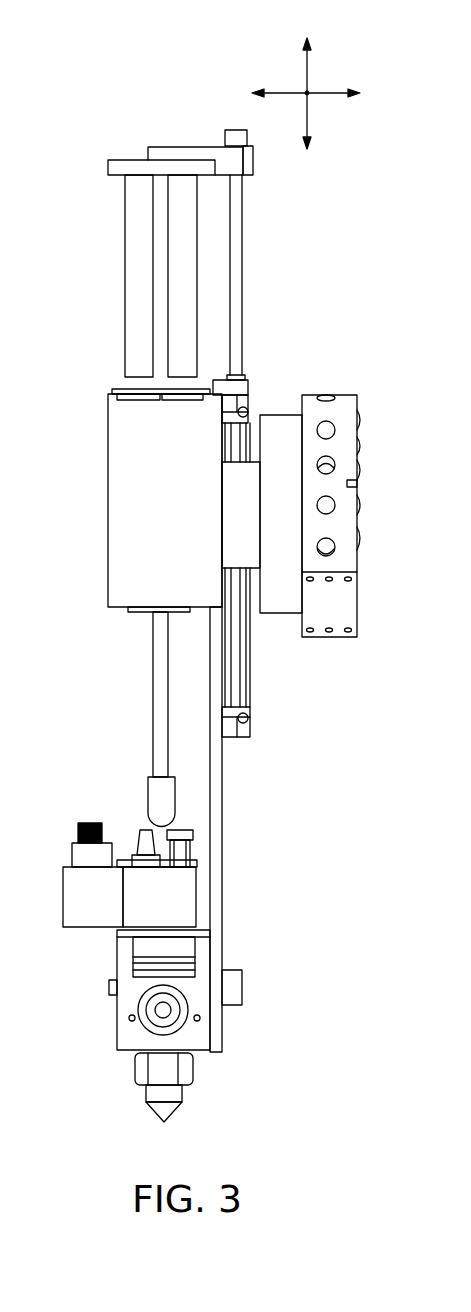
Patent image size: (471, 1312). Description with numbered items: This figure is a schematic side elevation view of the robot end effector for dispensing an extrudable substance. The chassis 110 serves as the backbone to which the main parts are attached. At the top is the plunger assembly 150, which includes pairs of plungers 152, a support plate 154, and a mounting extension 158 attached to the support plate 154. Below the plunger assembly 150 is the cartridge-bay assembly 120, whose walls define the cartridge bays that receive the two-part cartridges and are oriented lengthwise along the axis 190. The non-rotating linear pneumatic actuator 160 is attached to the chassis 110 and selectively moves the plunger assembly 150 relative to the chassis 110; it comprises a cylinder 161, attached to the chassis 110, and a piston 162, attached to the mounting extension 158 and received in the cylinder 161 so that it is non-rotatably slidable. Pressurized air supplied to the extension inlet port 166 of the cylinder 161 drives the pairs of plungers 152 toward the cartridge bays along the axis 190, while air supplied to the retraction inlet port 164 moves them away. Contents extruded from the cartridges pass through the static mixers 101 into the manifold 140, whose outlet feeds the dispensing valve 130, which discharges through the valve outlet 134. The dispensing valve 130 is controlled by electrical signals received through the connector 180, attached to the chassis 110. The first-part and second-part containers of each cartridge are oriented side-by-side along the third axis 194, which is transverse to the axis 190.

The static mixers 101 is at (153, 719).
The chassis 110 is at (223, 850).
The cartridge-bay assembly 120 is at (108, 577).
The dispensing valve 130 is at (117, 953).
The valve outlet 134 is at (156, 1131).
The manifold 140 is at (148, 797).
The plunger assembly 150 is at (164, 236).
The pairs of plungers 152 is at (125, 322).
The support plate 154 is at (125, 158).
The mounting extension 158 is at (185, 145).
The non-rotating linear pneumatic actuator 160 is at (237, 645).
The cylinder 161 is at (245, 690).
The piston 162 is at (243, 257).
The retraction inlet port 164 is at (258, 401).
The extension inlet port 166 is at (254, 746).
The connector 180 is at (358, 600).
The axis 190 is at (305, 62).
The third axis 194 is at (329, 90).